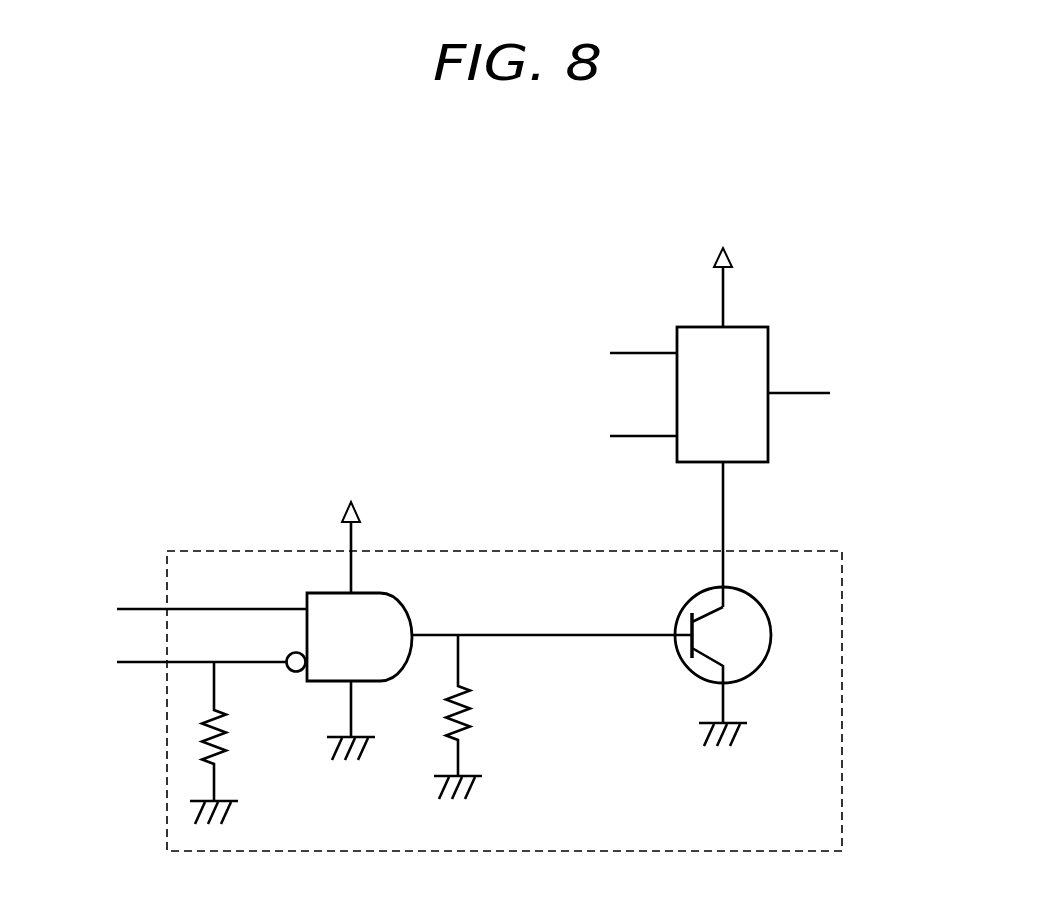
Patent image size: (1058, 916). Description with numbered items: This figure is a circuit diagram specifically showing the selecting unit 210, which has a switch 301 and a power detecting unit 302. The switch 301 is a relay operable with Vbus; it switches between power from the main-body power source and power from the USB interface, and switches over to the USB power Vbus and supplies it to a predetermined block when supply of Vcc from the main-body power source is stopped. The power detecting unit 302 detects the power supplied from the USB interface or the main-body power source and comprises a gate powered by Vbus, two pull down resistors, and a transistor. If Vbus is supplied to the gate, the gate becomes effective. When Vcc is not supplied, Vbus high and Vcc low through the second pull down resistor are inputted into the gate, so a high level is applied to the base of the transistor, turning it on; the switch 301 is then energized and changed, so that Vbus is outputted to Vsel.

The selecting unit 210 is at (502, 213).
The switch 301 is at (768, 342).
The power detecting unit 302 is at (842, 585).